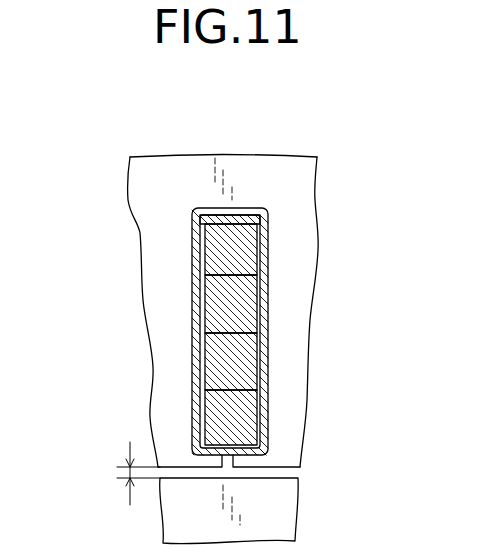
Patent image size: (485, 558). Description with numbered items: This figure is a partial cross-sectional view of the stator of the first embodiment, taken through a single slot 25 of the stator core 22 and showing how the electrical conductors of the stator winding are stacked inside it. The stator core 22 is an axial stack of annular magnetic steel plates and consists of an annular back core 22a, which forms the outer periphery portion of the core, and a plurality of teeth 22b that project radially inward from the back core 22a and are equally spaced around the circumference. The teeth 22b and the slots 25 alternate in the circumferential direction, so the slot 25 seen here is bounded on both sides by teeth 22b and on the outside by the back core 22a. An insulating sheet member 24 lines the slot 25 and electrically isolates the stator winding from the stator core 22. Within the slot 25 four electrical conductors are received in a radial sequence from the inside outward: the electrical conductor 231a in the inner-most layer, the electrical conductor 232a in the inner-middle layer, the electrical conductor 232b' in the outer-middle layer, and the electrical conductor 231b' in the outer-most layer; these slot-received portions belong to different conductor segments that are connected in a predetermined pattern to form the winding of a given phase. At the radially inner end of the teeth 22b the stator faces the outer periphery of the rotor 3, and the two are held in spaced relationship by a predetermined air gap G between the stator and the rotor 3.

The stator core 22 is at (172, 153).
The back core 22a is at (271, 157).
The teeth 22b is at (162, 402).
The insulating sheet member 24 is at (266, 216).
The slot 25 is at (192, 243).
The electrical conductor 231b' is at (309, 249).
The electrical conductor 232b' is at (308, 304).
The electrical conductor 232a is at (263, 355).
The electrical conductor 231a is at (263, 410).
The rotor 3 is at (160, 517).
The air gap G is at (127, 473).